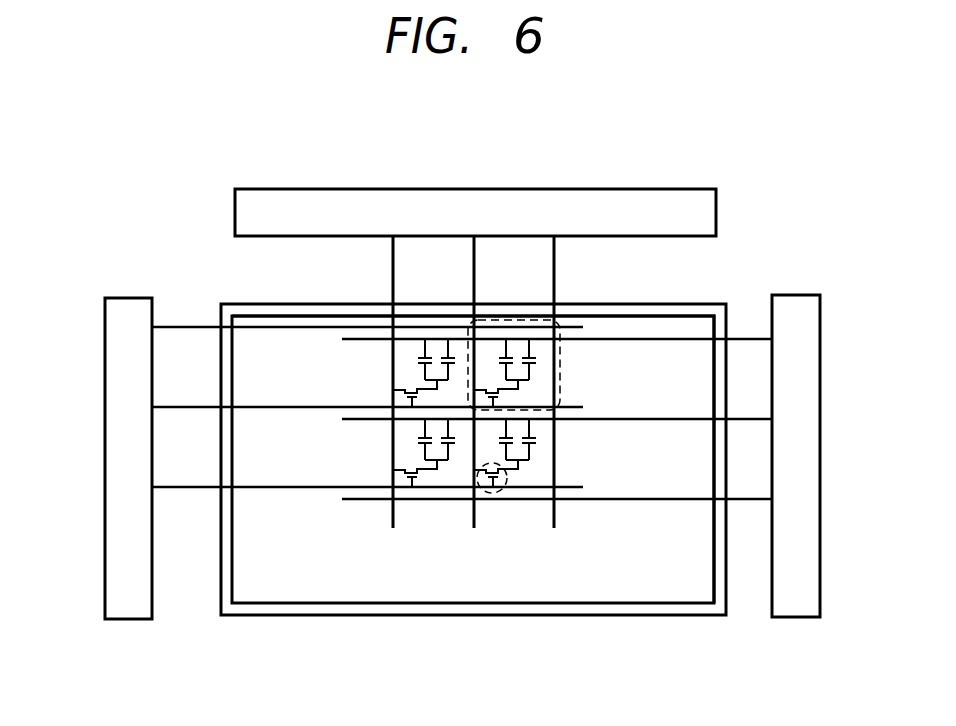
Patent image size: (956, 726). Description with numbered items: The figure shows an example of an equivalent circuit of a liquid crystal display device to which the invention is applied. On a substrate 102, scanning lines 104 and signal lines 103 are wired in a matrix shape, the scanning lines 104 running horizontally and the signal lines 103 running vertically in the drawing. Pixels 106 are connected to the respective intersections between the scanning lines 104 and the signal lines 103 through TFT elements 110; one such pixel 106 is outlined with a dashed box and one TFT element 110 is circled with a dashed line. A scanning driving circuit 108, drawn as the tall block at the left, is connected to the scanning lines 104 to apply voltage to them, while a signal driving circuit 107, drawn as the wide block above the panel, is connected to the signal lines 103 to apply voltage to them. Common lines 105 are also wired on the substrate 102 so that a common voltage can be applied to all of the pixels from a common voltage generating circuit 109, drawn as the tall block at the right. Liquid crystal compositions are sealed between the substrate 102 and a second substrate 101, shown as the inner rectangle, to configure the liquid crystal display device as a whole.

The substrate 101 is at (384, 573).
The substrate 102 is at (313, 615).
The signal lines 103 is at (393, 263).
The scanning lines 104 is at (182, 326).
The common lines 105 is at (690, 337).
The pixels 106 is at (560, 357).
The signal driving circuit 107 is at (403, 190).
The scanning driving circuit 108 is at (105, 338).
The common voltage generating circuit 109 is at (820, 337).
The TFT element 110 is at (492, 493).